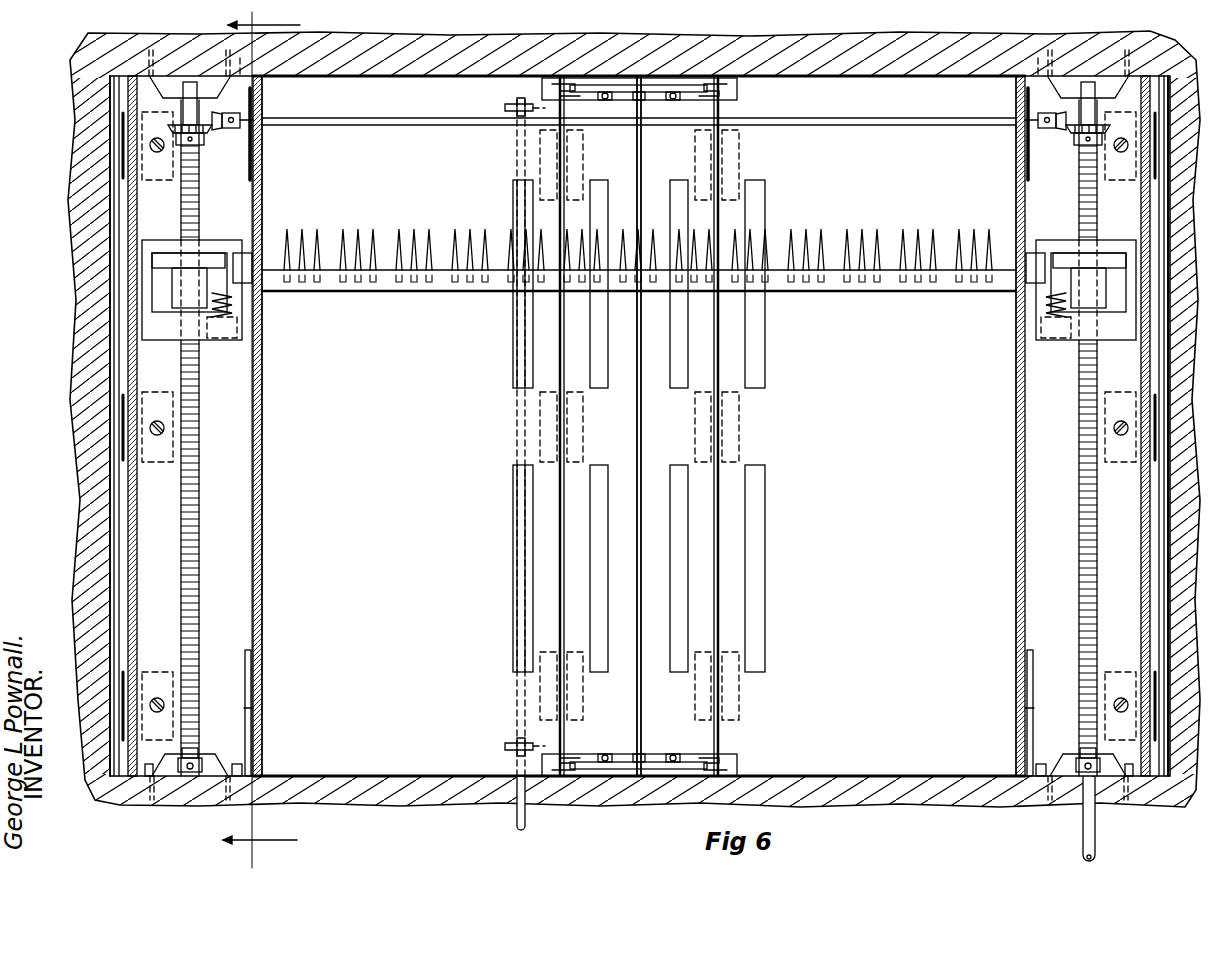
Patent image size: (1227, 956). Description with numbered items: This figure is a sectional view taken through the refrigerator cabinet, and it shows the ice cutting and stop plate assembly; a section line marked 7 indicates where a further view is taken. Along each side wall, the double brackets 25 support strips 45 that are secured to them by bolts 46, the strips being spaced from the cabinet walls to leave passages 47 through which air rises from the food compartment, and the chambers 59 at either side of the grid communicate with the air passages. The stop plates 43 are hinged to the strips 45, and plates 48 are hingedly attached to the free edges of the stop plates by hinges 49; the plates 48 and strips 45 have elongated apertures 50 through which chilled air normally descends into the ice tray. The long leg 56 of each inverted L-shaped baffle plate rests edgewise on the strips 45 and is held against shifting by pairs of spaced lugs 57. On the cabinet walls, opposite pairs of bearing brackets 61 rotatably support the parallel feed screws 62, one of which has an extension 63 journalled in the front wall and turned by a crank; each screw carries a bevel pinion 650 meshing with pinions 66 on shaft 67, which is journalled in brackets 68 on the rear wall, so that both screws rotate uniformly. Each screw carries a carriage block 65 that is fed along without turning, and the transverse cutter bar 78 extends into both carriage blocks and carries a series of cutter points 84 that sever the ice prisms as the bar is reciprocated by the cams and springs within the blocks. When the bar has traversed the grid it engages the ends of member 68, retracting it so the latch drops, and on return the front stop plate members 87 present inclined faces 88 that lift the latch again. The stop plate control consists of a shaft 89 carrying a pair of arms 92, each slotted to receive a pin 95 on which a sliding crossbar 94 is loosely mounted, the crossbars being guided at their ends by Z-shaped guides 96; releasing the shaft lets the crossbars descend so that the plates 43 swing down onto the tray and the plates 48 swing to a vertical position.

The section line 7- 7 is at (274, 445).
The double brackets 25 is at (178, 392).
The stop plates 43 is at (392, 722).
The strips 45 is at (240, 540).
The bolts 46 is at (157, 153).
The passages 47 is at (1148, 590).
The plates 48 is at (580, 526).
The hinges 49 is at (540, 165).
The elongated apertures 50 is at (515, 323).
The long leg 56 is at (185, 540).
The lugs 57 is at (122, 185).
The chambers 59 is at (90, 225).
The bearing brackets 61 is at (248, 95).
The feed screws 62 is at (185, 520).
The extension 63 is at (1097, 836).
The carriage block 65 is at (245, 340).
The pinions 66 is at (228, 130).
The shaft 67 is at (415, 127).
The brackets 68 is at (253, 163).
The cutter bar 78 is at (912, 294).
The cutter points 84 is at (933, 228).
The front stop plate members 87 is at (258, 709).
The inclined faces 88 is at (256, 672).
The shaft 89 is at (520, 800).
The arms 92 is at (512, 115).
The sliding crossbar 94 is at (690, 88).
The pin 95 is at (640, 735).
The Z-shaped guides 96 is at (548, 98).
The bevel pinion 650 is at (203, 150).